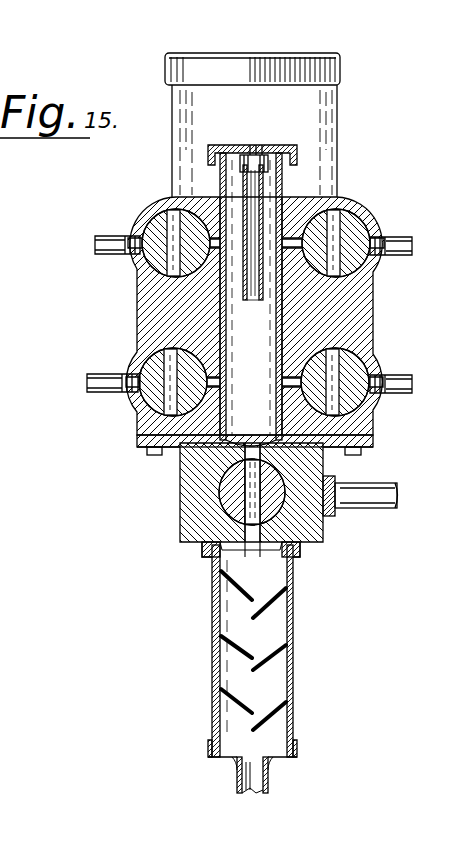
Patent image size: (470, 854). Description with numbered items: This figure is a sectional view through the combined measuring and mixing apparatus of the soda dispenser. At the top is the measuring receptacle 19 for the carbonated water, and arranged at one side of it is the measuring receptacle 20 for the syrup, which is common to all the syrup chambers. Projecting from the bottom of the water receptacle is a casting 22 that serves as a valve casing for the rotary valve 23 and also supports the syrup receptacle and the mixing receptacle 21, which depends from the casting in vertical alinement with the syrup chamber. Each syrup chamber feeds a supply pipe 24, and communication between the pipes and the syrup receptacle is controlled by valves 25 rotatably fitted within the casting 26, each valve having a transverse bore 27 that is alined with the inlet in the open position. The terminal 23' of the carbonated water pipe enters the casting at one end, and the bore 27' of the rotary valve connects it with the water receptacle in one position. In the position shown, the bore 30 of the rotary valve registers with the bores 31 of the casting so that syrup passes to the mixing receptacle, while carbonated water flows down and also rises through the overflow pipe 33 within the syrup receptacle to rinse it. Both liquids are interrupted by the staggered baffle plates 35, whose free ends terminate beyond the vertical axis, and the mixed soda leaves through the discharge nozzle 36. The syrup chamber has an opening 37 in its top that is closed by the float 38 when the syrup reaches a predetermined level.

The measuring receptacle for the carbonated water 19 is at (285, 118).
The measuring receptacle for the syrup 20 is at (270, 312).
The mixing receptacle 21 is at (265, 625).
The casting 22 is at (185, 510).
The rotary valve 23 is at (210, 492).
The terminal of the water supply pipe 23' is at (366, 487).
The supply pipe 24 is at (402, 246).
The valve 25 is at (350, 228).
The casting 26 is at (140, 325).
The transverse bore 27 is at (254, 324).
The bore 27' is at (306, 500).
The bore 30 is at (215, 548).
The bores of the casting 31 is at (330, 462).
The overflow pipe 33 is at (240, 183).
The baffle plates 35 is at (252, 668).
The discharge nozzle 36 is at (270, 784).
The opening 37 is at (251, 155).
The float 38 is at (258, 170).